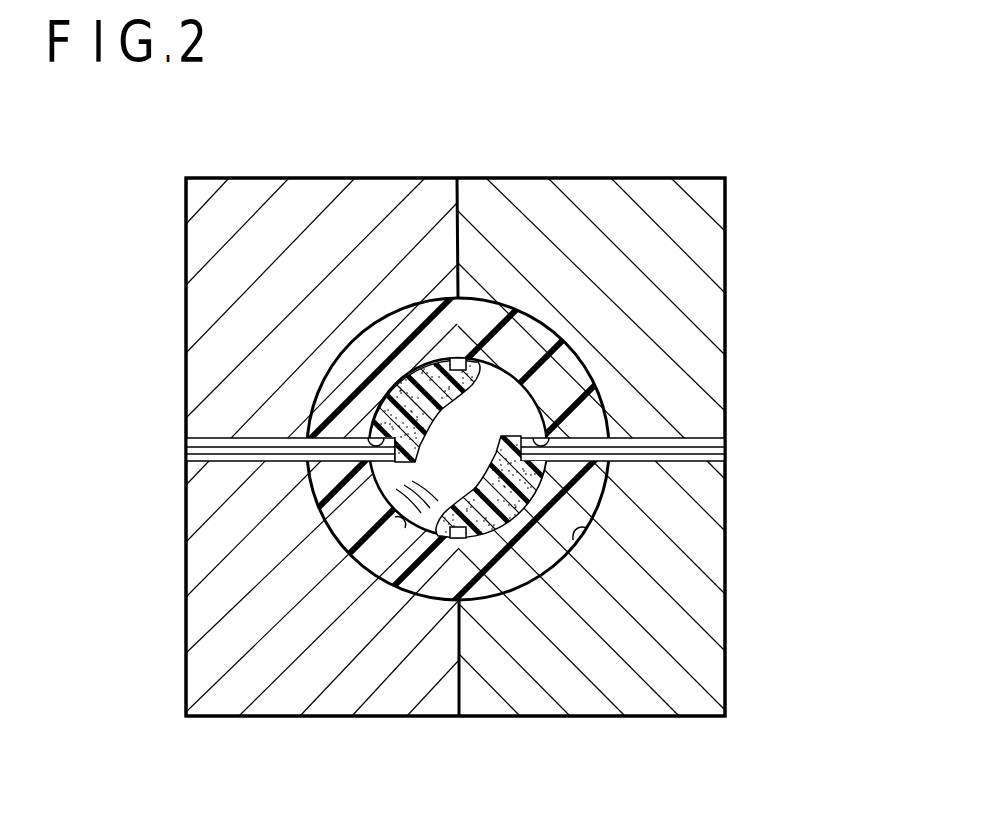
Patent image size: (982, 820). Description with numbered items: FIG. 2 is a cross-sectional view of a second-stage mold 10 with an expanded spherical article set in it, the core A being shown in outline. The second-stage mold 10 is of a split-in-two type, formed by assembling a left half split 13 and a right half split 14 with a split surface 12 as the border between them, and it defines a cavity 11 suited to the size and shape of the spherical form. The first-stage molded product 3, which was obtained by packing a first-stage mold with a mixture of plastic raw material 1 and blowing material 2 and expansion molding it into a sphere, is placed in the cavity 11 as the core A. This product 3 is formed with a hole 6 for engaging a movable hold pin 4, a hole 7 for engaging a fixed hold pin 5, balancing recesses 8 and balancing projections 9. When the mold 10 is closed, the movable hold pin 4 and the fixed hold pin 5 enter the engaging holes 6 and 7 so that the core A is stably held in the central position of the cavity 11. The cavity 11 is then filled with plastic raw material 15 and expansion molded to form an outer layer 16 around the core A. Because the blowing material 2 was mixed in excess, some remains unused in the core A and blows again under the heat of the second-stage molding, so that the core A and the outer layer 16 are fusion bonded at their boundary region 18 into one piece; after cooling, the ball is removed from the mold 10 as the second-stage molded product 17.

The plastic raw material 1 is at (547, 460).
The blowing material 2 is at (546, 495).
The first-stage molded product 3 is at (259, 525).
The core A is at (355, 494).
The movable hold pin 4 is at (220, 448).
The fixed hold pin 5 is at (693, 437).
The hole 6 is at (378, 442).
The hole 7 is at (540, 442).
The balancing recesses 8 is at (462, 358).
The balancing projections 9 is at (527, 382).
The second-stage mold 10 is at (526, 147).
The cavity 11 is at (573, 540).
The split surface 12 is at (445, 188).
The left half split 13 is at (377, 188).
The right half split 14 is at (598, 188).
The plastic raw material 15 is at (355, 535).
The outer layer 16 is at (200, 605).
The second-stage molded product 17 is at (363, 295).
The boundary region 18 is at (410, 532).